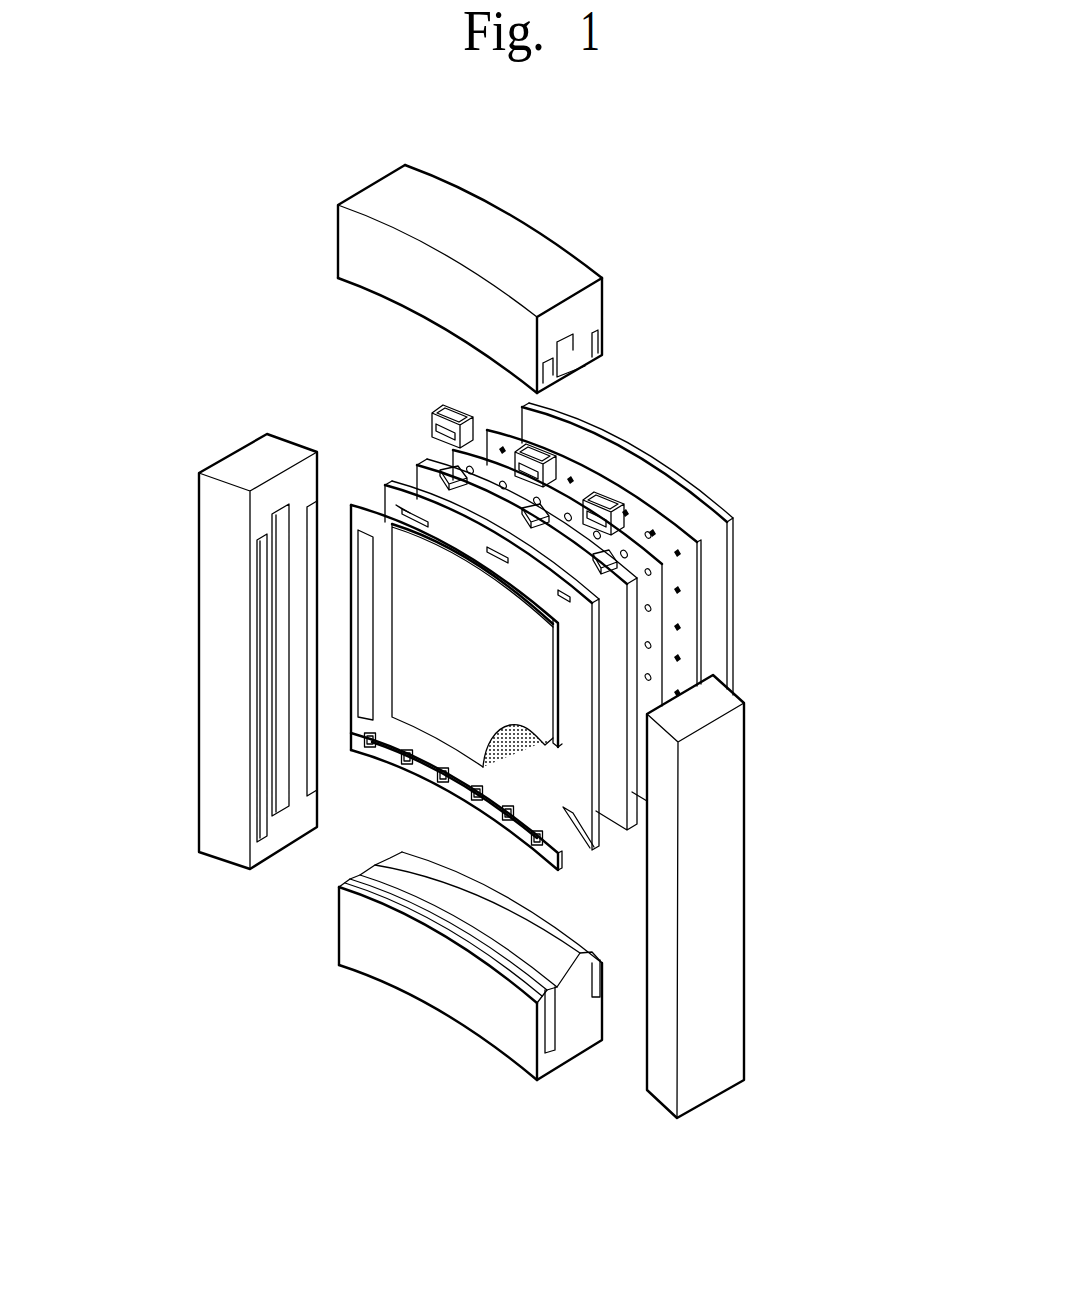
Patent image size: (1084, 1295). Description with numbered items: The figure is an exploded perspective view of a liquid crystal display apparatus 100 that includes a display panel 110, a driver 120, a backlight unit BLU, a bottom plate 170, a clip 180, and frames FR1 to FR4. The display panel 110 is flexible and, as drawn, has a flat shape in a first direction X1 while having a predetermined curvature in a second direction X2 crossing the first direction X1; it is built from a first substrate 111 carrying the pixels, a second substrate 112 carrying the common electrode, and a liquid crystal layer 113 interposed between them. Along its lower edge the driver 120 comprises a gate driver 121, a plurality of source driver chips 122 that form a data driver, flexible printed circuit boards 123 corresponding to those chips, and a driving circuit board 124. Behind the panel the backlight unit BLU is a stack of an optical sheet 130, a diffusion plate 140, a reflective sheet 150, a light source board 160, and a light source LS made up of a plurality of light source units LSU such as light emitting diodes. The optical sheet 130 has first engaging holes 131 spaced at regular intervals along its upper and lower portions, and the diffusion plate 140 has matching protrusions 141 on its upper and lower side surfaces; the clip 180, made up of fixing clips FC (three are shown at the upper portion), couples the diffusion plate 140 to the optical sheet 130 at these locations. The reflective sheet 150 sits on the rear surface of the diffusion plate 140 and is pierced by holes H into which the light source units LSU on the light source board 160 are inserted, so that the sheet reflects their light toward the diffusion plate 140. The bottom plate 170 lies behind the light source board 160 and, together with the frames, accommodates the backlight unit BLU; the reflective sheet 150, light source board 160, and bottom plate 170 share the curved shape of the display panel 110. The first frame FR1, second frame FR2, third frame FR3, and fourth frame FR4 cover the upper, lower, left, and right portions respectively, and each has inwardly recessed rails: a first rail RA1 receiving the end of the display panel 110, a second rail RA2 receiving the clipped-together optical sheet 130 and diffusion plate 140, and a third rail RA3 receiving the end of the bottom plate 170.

The liquid crystal display apparatus 100 is at (695, 213).
The display panel 110 is at (700, 793).
The first substrate 111 is at (553, 827).
The second substrate 112 is at (547, 722).
The liquid crystal layer 113 is at (536, 750).
The driver 120 is at (323, 687).
The gate driver 121 is at (364, 673).
The source driver chips 122 is at (388, 742).
The flexible printed circuit boards 123 is at (355, 748).
The driving circuit board 124 is at (383, 758).
The optical sheet 130 is at (593, 663).
The first engaging holes 131 is at (386, 490).
The diffusion plate 140 is at (601, 629).
The protrusions 141 is at (452, 458).
The reflective sheet 150 is at (650, 625).
The light source board 160 is at (699, 555).
The bottom plate 170 is at (673, 478).
The clip 180 is at (494, 433).
The fixing clips FC is at (440, 406).
The first frame FR1 is at (517, 290).
The second frame FR2 is at (348, 929).
The third frame FR3 is at (318, 420).
The fourth frame FR4 is at (726, 895).
The first rail RA1 is at (547, 370).
The second rail RA2 is at (573, 355).
The third rail RA3 is at (600, 342).
The light source units LSU is at (655, 533).
The light source LS is at (668, 571).
The backlight unit BLU is at (623, 639).
The holes H is at (650, 677).
The first direction X1 is at (842, 1072).
The second direction X2 is at (842, 1072).